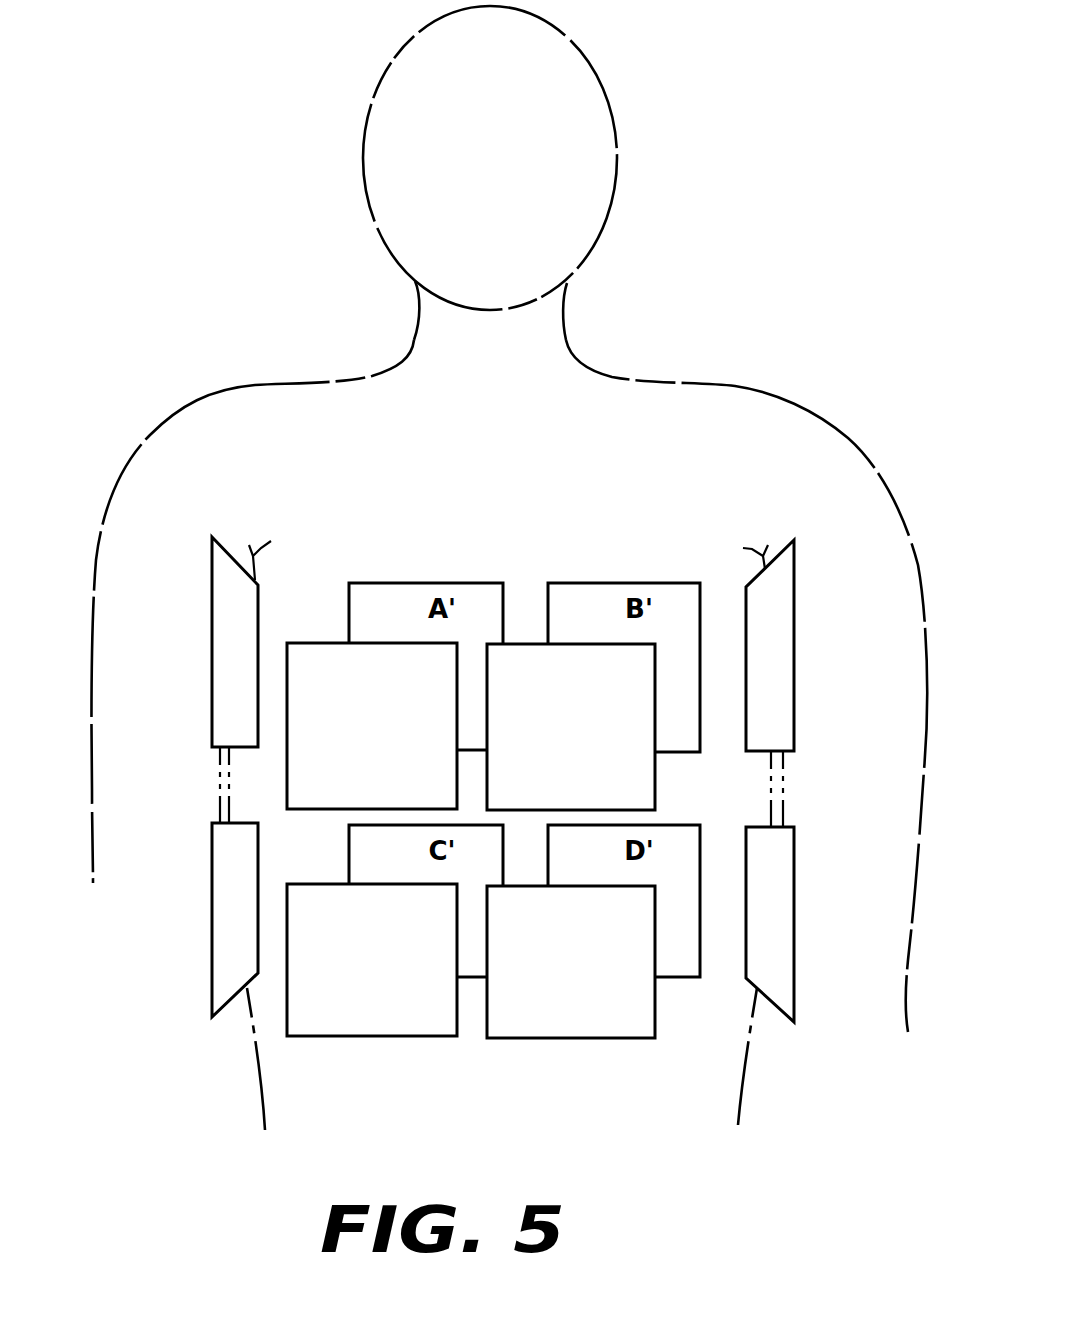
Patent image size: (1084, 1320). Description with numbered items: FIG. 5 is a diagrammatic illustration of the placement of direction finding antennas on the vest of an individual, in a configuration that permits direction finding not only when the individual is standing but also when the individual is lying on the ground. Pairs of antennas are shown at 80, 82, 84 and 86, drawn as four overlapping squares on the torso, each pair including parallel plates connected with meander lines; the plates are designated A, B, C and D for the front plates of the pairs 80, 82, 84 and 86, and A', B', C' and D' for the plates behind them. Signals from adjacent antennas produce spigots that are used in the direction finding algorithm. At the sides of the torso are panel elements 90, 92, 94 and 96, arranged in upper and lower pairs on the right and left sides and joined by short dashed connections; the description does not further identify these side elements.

The antenna pair 80 is at (411, 698).
The antenna pair 82 is at (549, 697).
The antenna pair 84 is at (411, 939).
The antenna pair 86 is at (550, 939).
The right upper antenna panel 90 is at (794, 605).
The right lower panel 92 is at (794, 963).
The left upper antenna panel 94 is at (212, 677).
The left lower panel 96 is at (212, 890).